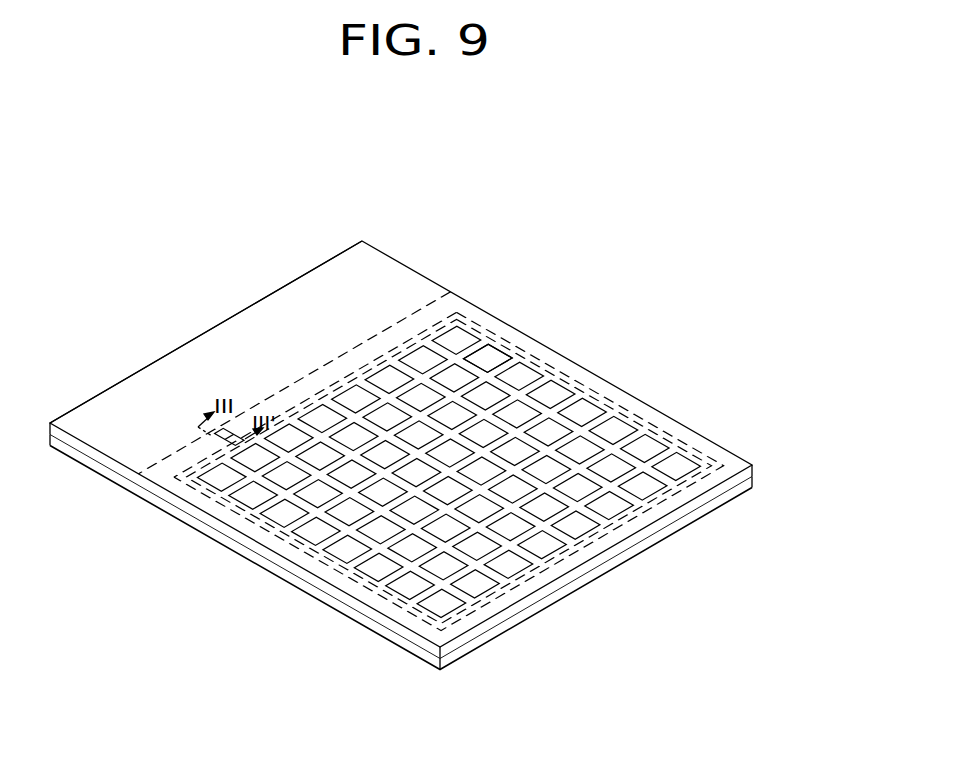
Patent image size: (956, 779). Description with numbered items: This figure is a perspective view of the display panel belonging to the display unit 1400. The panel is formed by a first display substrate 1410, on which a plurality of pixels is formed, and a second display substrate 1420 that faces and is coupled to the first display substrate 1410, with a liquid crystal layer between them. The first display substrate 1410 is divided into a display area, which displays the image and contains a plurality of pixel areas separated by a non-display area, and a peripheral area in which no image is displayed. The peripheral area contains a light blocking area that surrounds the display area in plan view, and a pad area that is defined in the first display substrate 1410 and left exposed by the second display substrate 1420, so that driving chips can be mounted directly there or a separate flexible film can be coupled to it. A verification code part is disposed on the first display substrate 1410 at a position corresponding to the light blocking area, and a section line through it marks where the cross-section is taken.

The display unit 1400 is at (725, 408).
The first display substrate 1410 is at (753, 472).
The second display substrate 1420 is at (753, 483).